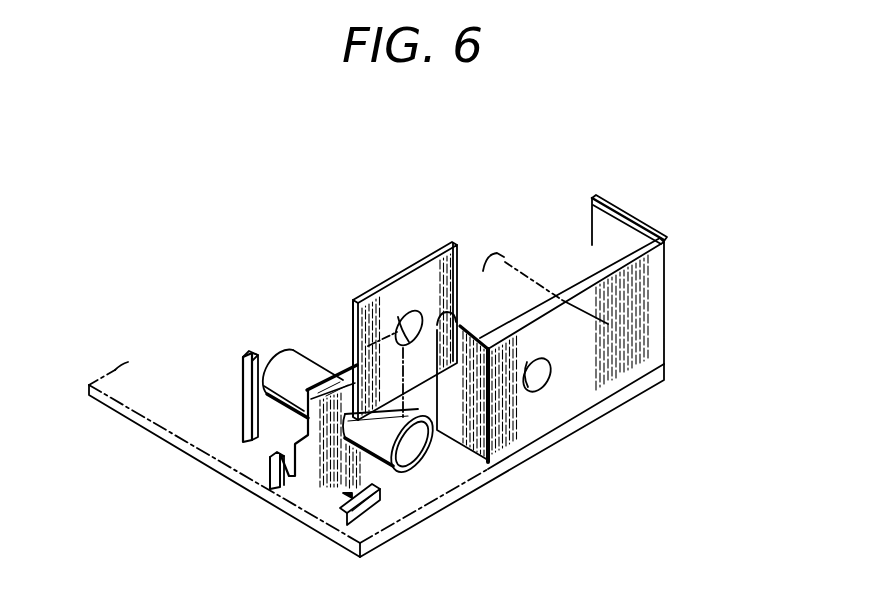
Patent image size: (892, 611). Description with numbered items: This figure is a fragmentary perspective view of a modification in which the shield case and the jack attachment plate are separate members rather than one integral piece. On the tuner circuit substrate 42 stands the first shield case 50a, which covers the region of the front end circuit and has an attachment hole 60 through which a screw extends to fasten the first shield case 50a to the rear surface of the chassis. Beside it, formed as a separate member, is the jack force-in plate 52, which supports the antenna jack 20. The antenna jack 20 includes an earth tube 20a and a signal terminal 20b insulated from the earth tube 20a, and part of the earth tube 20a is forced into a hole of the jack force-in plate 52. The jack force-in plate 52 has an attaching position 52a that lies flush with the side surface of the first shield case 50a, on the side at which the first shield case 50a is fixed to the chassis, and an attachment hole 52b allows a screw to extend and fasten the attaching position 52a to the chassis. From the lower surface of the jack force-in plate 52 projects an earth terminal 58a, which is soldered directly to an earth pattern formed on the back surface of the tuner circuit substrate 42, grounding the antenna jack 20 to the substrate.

The antenna jack 20 is at (427, 462).
The earth tube 20a is at (293, 357).
The signal terminal 20b is at (240, 416).
The tuner circuit substrate 42 is at (543, 452).
The first shield case 50a is at (637, 312).
The jack force-in plate 52 is at (283, 478).
The attaching position 52a is at (438, 299).
The attachment hole 52b is at (410, 310).
The earth terminal (attachment strip) 58a is at (314, 483).
The attachment hole 60 is at (552, 382).